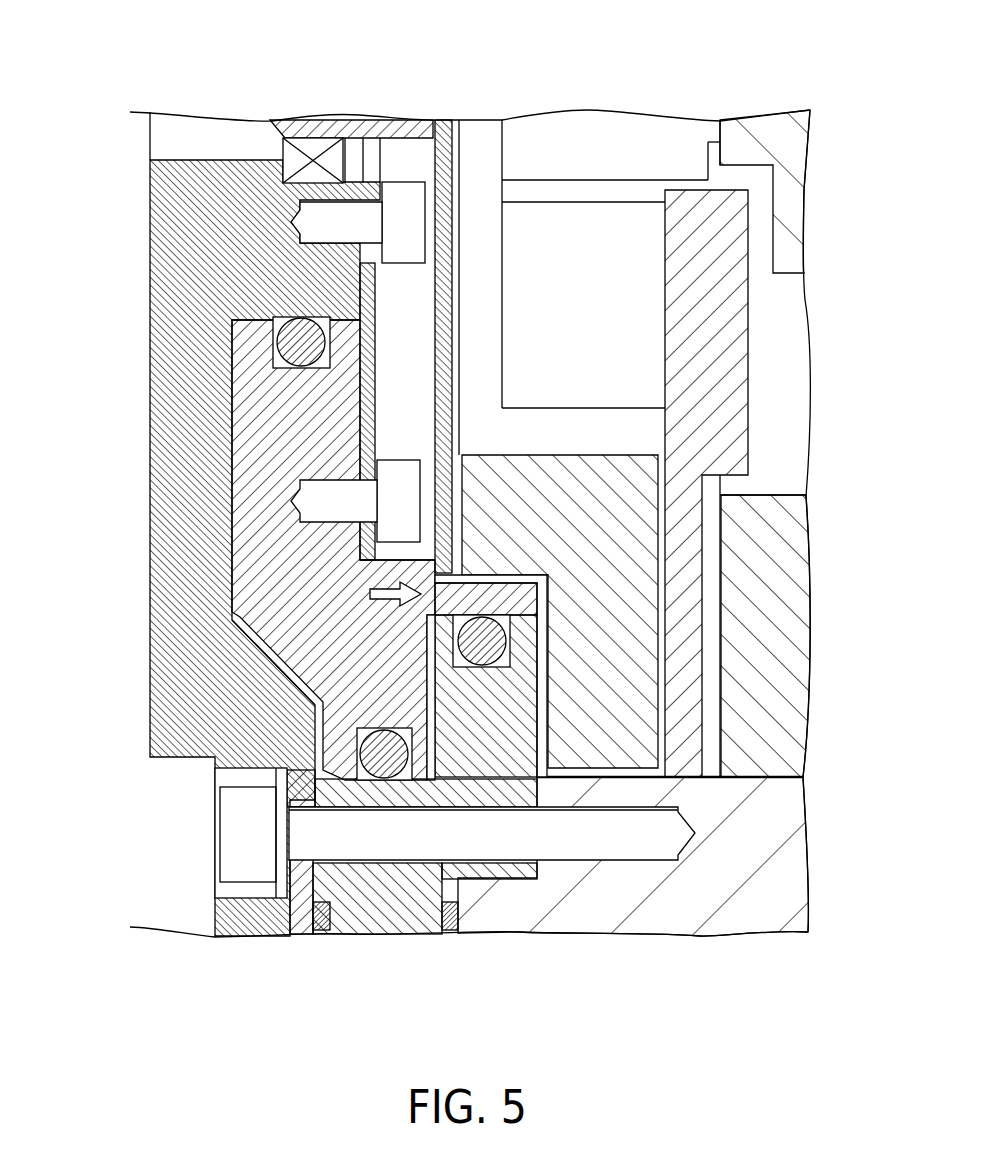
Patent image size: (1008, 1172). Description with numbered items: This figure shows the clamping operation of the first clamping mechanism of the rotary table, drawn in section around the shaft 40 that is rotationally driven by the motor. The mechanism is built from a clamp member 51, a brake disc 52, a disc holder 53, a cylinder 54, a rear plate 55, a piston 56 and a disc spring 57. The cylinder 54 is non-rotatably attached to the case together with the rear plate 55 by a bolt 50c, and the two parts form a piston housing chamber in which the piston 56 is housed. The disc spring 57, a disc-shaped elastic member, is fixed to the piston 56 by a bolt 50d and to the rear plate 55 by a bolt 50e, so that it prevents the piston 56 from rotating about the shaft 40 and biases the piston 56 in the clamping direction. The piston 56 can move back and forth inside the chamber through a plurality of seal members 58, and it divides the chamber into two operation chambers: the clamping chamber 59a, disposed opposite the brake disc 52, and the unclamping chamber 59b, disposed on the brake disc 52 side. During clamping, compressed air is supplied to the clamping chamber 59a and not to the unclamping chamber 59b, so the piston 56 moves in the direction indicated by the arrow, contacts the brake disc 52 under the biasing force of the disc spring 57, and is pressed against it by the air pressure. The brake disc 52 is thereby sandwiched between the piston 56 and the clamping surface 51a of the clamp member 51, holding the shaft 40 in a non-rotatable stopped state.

The shaft 40 is at (797, 160).
The clamp member 51 is at (628, 750).
The clamping surface 51a is at (552, 775).
The brake disc 52 is at (437, 283).
The disc holder 53 is at (315, 118).
The cylinder 54 is at (422, 917).
The rear plate 55 is at (150, 197).
The piston 56 is at (250, 578).
The disc spring 57 is at (363, 405).
The seal member 58 is at (277, 343).
The clamping chamber 59a is at (320, 782).
The unclamping chamber 59b is at (453, 577).
The bolt 50c is at (230, 838).
The bolt 50d is at (310, 497).
The bolt 50e is at (407, 197).